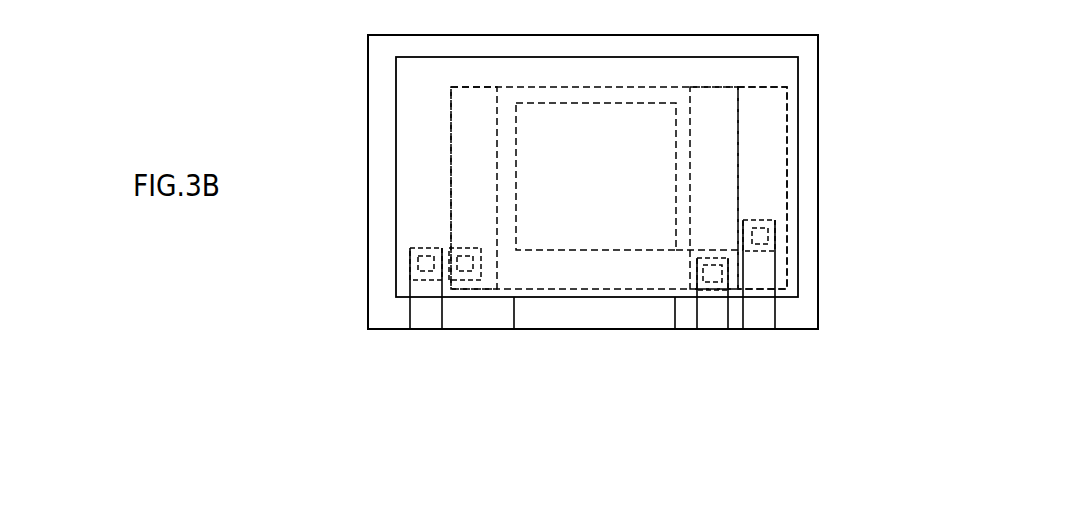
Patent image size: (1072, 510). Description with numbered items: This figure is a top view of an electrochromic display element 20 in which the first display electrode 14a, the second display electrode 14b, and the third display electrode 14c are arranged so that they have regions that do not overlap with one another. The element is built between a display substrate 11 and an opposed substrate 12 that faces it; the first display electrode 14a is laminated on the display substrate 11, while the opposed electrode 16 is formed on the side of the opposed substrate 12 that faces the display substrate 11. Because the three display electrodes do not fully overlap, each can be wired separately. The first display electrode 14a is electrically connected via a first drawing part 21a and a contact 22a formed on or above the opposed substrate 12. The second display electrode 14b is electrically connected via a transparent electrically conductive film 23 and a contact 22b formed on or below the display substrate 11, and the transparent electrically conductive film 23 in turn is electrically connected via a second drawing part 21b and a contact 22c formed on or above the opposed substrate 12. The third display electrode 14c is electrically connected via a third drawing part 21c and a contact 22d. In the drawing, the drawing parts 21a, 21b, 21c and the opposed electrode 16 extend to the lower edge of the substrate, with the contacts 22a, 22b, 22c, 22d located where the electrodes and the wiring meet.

The electrochromic display element 20 is at (851, 30).
The display substrate 11 is at (787, 73).
The opposed substrate 12 is at (803, 315).
The first display electrode 14a is at (775, 127).
The second display electrode 14b is at (467, 143).
The third display electrode 14c is at (730, 177).
The opposed electrode 16 is at (593, 320).
The first drawing part 21a is at (758, 322).
The second drawing part 21b is at (423, 318).
The third drawing part 21c is at (713, 322).
The contact 22a is at (762, 236).
The contact 22b is at (463, 272).
The contact 22c is at (410, 265).
The contact 22d is at (690, 290).
The transparent electrically conductive film 23 is at (447, 247).